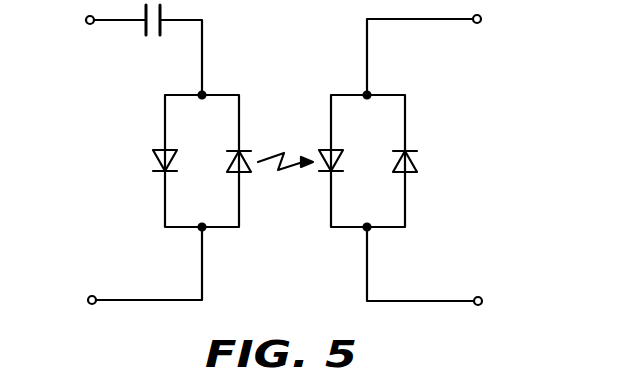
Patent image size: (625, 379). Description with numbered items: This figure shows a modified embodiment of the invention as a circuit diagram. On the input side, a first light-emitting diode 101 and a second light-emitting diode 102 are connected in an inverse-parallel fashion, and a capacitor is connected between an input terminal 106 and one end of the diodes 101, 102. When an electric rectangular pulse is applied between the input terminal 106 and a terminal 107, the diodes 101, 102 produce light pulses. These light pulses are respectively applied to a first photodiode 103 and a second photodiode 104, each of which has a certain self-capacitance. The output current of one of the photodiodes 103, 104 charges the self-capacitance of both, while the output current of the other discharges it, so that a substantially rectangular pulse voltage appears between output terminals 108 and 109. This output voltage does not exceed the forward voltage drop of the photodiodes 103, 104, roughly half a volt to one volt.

The first light-emitting diode 101 is at (155, 158).
The second light-emitting diode 102 is at (245, 173).
The first photodiode 103 is at (328, 150).
The second photodiode 104 is at (415, 161).
The input terminal 106 is at (86, 24).
The terminal 107 is at (88, 296).
The output terminal 108 is at (482, 23).
The output terminal 109 is at (485, 296).